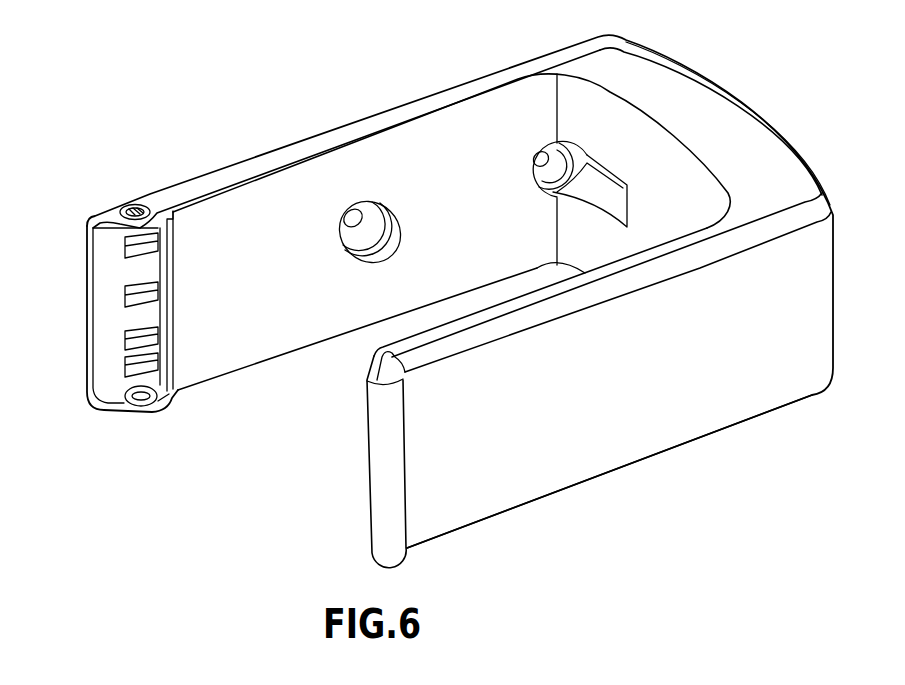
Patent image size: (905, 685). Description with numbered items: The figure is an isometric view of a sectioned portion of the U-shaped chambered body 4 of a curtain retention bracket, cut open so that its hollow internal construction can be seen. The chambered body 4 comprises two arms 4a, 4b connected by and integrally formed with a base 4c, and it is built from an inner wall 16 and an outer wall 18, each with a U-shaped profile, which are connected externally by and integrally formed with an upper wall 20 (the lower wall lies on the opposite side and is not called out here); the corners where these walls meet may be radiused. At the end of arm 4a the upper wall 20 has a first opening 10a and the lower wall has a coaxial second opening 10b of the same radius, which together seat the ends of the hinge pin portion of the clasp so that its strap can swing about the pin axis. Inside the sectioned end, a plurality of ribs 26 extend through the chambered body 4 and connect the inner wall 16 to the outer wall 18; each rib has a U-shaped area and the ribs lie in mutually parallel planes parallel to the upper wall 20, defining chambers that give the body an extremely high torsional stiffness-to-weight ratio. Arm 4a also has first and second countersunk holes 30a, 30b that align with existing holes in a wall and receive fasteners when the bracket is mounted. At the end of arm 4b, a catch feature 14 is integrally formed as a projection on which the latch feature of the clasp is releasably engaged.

The U-shaped chambered body 4 is at (640, 33).
The arm 4a is at (311, 137).
The arm 4b is at (497, 516).
The base 4c is at (699, 80).
The first opening 10a is at (147, 207).
The second opening 10b is at (125, 408).
The catch feature 14 is at (378, 513).
The inner wall 16 is at (424, 146).
The outer wall 18 is at (626, 450).
The upper wall 20 is at (762, 143).
The ribs 26 is at (138, 301).
The first countersunk hole 30a is at (399, 234).
The second countersunk hole 30b is at (533, 163).